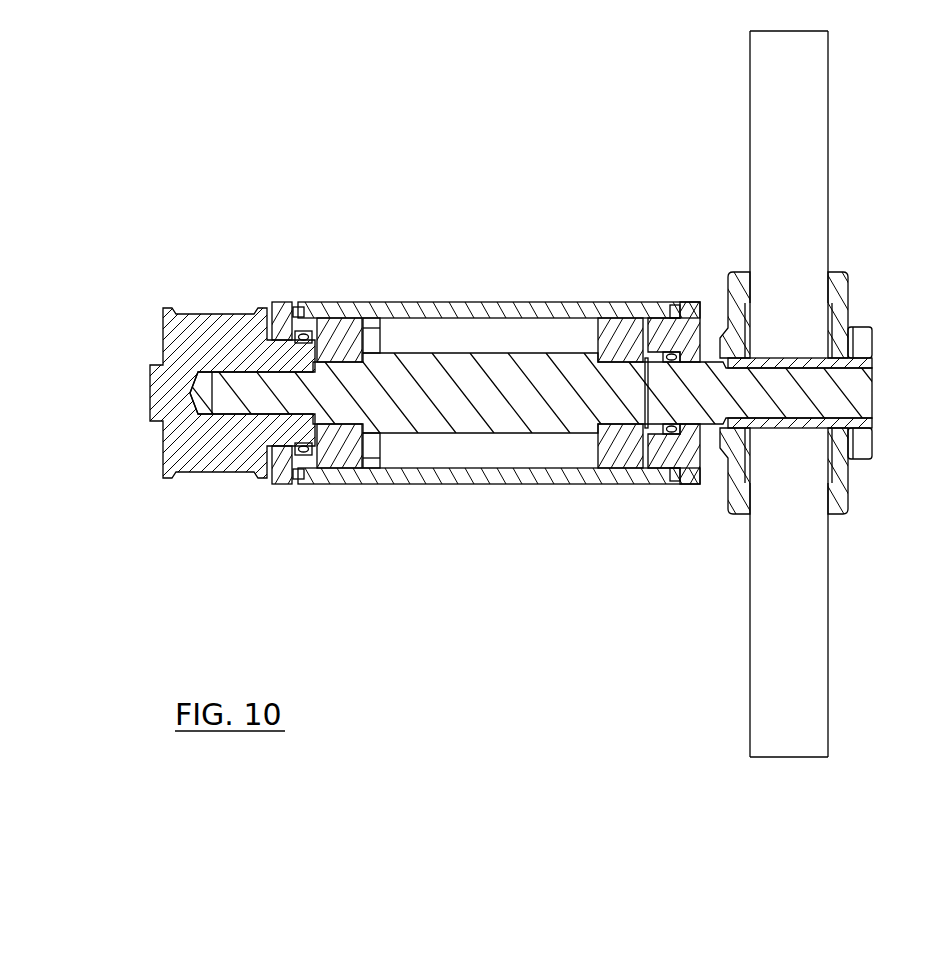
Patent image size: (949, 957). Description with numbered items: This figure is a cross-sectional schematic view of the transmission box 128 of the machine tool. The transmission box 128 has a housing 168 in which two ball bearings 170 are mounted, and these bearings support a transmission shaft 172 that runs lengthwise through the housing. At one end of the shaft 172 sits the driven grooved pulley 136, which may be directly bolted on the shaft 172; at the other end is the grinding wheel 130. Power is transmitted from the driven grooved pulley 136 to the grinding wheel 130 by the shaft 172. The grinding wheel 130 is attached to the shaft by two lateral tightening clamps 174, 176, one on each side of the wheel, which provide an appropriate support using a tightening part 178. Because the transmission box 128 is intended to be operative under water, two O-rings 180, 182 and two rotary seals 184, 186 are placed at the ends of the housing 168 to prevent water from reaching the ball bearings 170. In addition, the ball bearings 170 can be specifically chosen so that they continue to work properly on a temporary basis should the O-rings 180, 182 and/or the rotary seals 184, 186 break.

The transmission box 128 is at (401, 178).
The grinding wheel 130 is at (813, 597).
The driven grooved pulley 136 is at (196, 315).
The housing 168 is at (392, 302).
The ball bearings 170 is at (360, 465).
The transmission shaft 172 is at (478, 360).
The lateral tightening clamp 174 is at (733, 280).
The lateral tightening clamp 176 is at (845, 275).
The tightening part 178 is at (863, 353).
The O-ring 180 is at (302, 483).
The O-ring 182 is at (672, 478).
The rotary seal 184 is at (295, 465).
The rotary seal 186 is at (651, 435).